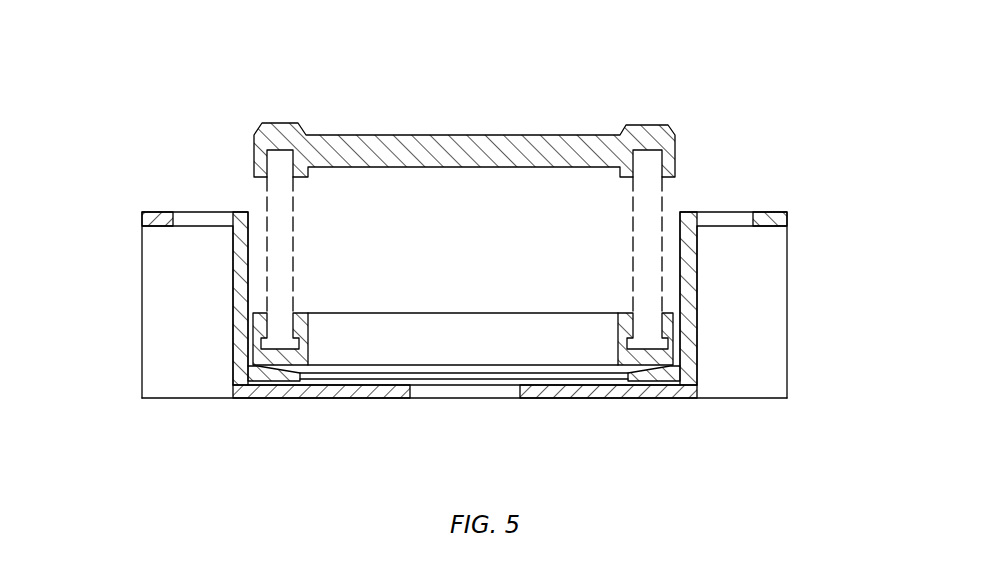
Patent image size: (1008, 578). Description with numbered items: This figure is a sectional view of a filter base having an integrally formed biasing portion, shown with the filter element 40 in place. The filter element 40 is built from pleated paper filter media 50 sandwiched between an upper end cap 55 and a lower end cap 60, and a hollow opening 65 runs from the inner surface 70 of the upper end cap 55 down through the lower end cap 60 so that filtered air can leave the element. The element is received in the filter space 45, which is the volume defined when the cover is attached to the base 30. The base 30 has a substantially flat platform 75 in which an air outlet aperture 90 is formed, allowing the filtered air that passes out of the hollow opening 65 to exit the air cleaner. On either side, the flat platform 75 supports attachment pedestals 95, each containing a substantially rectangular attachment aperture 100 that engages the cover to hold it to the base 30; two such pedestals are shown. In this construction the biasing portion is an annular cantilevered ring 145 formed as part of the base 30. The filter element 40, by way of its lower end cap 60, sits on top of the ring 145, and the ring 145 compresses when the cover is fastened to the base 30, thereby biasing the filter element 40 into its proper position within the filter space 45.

The base 30 is at (692, 400).
The filter element 40 is at (723, 83).
The filter space 45 is at (700, 195).
The pleated paper filter media 50 is at (288, 230).
The upper end cap 55 is at (337, 134).
The lower end cap 60 is at (310, 333).
The hollow opening 65 is at (466, 325).
The inner surface 70 is at (472, 168).
The flat platform 75 is at (372, 378).
The air outlet aperture 90 is at (497, 400).
The attachment pedestals 95 is at (152, 222).
The attachment apertures 100 is at (175, 213).
The annular cantilevered ring 145 is at (272, 375).